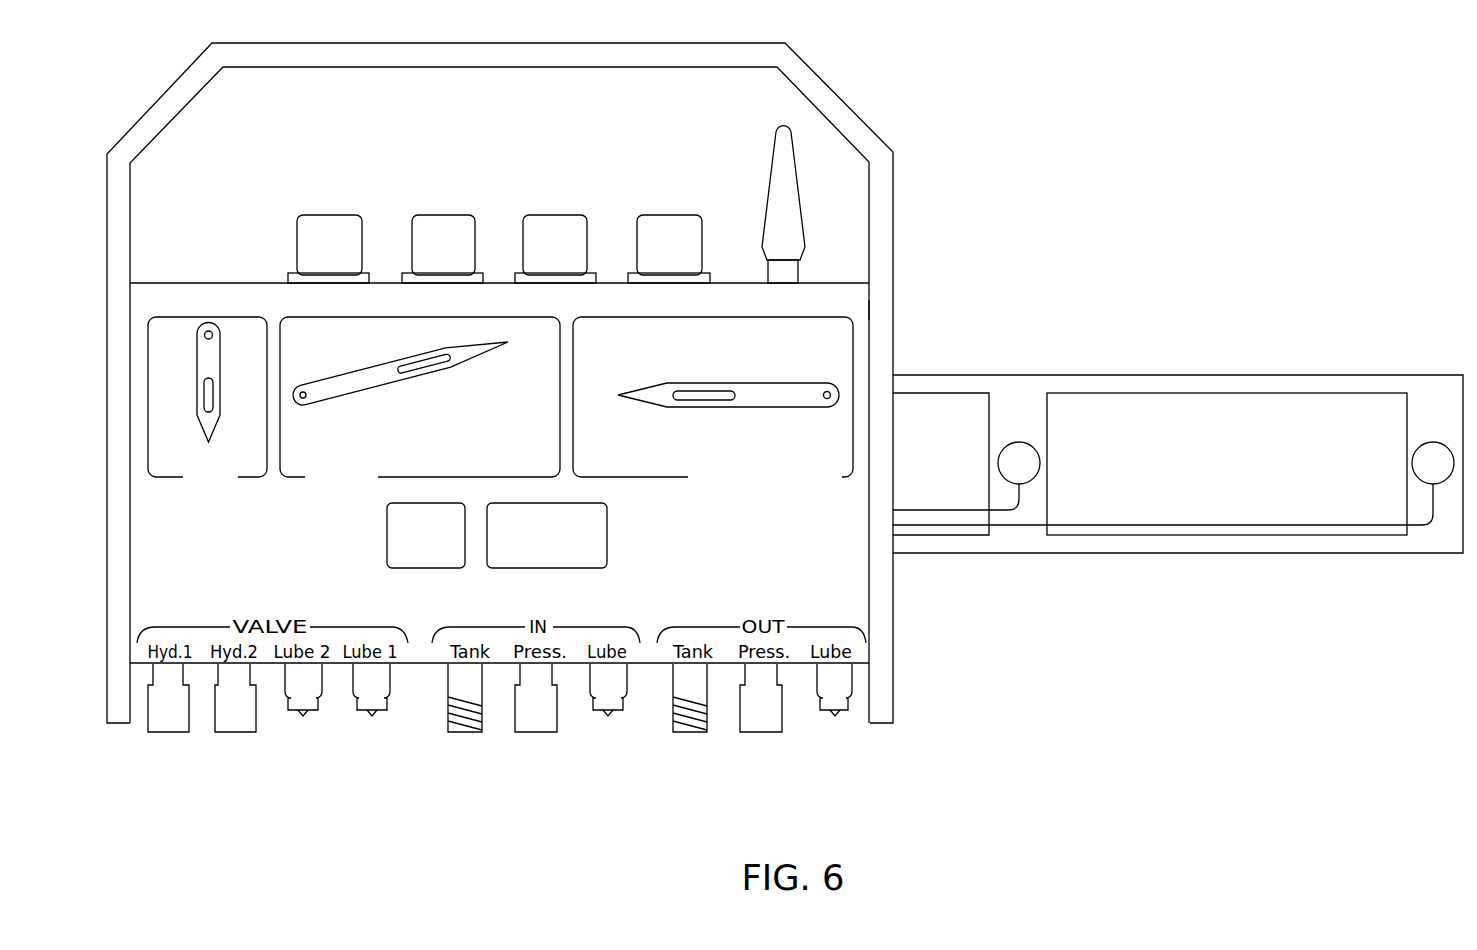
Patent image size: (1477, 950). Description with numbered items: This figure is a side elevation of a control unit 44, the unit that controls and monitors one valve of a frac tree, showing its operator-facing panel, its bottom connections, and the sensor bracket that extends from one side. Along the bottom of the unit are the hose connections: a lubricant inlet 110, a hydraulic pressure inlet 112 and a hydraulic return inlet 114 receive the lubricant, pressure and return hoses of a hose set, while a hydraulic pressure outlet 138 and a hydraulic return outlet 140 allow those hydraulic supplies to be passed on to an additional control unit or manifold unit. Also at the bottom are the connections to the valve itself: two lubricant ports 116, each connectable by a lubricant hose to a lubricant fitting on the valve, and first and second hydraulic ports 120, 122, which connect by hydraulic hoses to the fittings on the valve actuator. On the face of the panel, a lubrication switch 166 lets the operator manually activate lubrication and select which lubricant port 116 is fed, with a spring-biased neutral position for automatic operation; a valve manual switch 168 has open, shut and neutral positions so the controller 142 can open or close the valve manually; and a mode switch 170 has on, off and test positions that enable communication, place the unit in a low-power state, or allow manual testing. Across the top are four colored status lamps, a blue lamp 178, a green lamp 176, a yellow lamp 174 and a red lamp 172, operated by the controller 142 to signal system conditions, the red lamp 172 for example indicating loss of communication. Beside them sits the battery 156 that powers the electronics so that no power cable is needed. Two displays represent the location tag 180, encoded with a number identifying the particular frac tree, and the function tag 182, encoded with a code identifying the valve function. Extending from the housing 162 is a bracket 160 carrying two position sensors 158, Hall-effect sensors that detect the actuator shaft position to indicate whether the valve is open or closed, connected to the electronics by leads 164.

The control unit 44 is at (853, 97).
The lubricant inlet 110 is at (608, 717).
The hydraulic pressure inlet 112 is at (537, 733).
The hydraulic return inlet 114 is at (465, 733).
The lubricant port 116 is at (303, 717).
The first hydraulic port 120 is at (236, 733).
The second hydraulic port 122 is at (170, 733).
The hydraulic pressure outlet 138 is at (835, 717).
The hydraulic return outlet 140 is at (760, 733).
The controller 142 is at (690, 733).
The battery 156 is at (768, 156).
The position sensor 158 is at (1019, 442).
The bracket 160 is at (1112, 375).
The housing 162 is at (870, 309).
The leads 164 is at (937, 512).
The lubrication switch 166 is at (197, 357).
The valve manual switch 168 is at (730, 382).
The mode switch 170 is at (422, 379).
The red lamp 172 is at (669, 213).
The yellow lamp 174 is at (555, 213).
The green lamp 176 is at (441, 213).
The blue lamp 178 is at (328, 213).
The location tag 180 is at (387, 538).
The function tag 182 is at (607, 537).